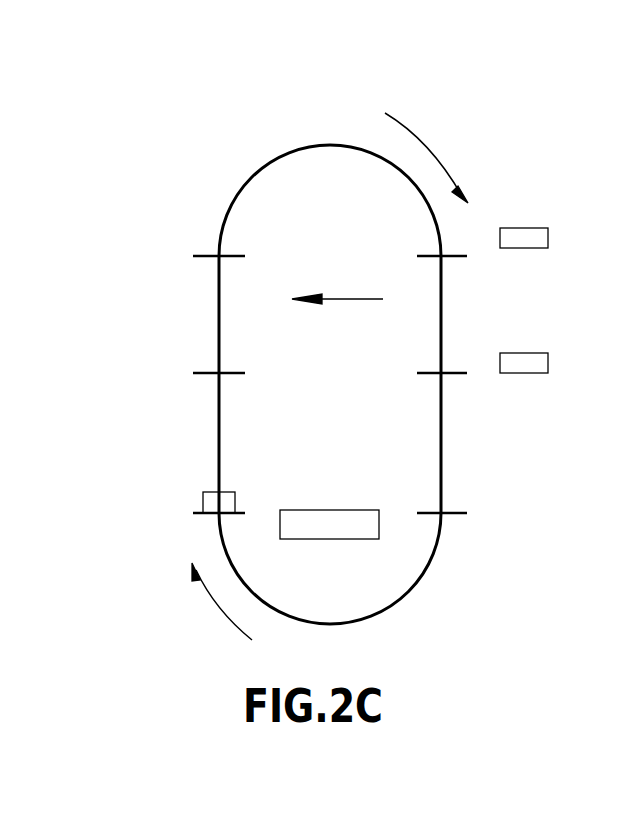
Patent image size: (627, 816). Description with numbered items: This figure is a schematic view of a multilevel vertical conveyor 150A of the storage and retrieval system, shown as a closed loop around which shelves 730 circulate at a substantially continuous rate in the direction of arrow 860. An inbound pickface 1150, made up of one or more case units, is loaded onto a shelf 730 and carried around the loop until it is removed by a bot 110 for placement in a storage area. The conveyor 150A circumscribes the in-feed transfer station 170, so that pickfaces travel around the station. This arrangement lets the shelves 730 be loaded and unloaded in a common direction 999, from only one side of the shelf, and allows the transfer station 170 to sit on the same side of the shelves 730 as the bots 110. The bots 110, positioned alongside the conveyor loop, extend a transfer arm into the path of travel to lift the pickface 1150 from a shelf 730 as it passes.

The multilevel vertical conveyor 150A is at (218, 130).
The shelves 730 is at (210, 371).
The arrow 860 is at (428, 142).
The common direction 999 is at (335, 299).
The bots 110 is at (526, 238).
The pickface 1150 is at (216, 490).
The in-feed transfer station 170 is at (322, 522).